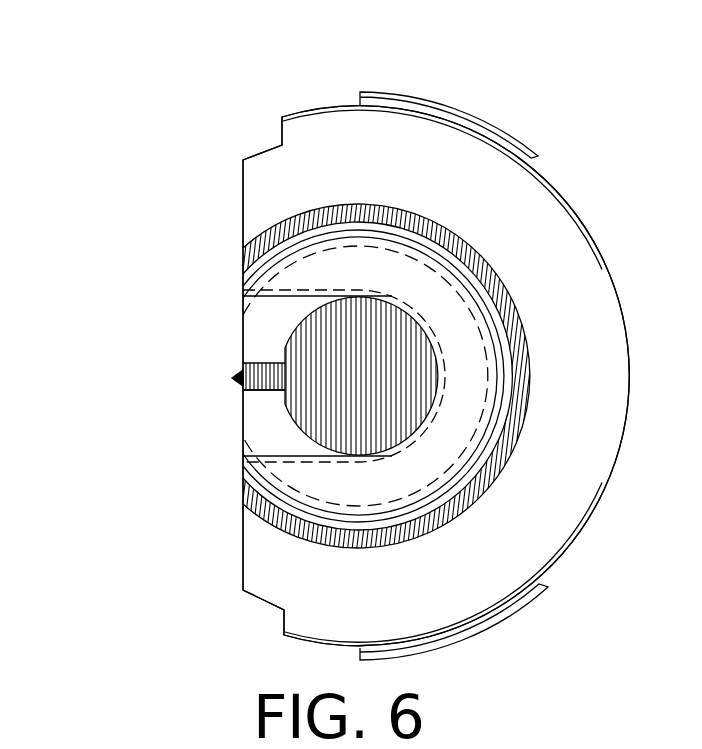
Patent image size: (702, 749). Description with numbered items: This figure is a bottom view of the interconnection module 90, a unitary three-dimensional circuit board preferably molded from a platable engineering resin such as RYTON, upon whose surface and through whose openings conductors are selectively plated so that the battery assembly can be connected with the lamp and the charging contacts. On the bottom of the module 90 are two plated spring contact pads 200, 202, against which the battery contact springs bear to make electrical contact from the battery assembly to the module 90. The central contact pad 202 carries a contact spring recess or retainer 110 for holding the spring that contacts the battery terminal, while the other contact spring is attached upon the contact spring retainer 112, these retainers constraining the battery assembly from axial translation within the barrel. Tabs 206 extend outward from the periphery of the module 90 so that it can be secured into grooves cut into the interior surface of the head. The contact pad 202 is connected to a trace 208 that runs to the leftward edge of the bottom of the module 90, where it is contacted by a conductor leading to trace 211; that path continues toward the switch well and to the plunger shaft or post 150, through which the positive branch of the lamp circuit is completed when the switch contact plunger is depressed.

The interconnection module 90 is at (136, 326).
The contact spring recess or retainer 110 is at (246, 296).
The contact spring retainer 112 is at (246, 291).
The plunger shaft 150 is at (240, 378).
The spring contact pad 200 is at (488, 258).
The spring contact pad 202 is at (288, 410).
The tabs 206 is at (442, 106).
The trace 208 is at (244, 364).
The trace 211 is at (244, 391).